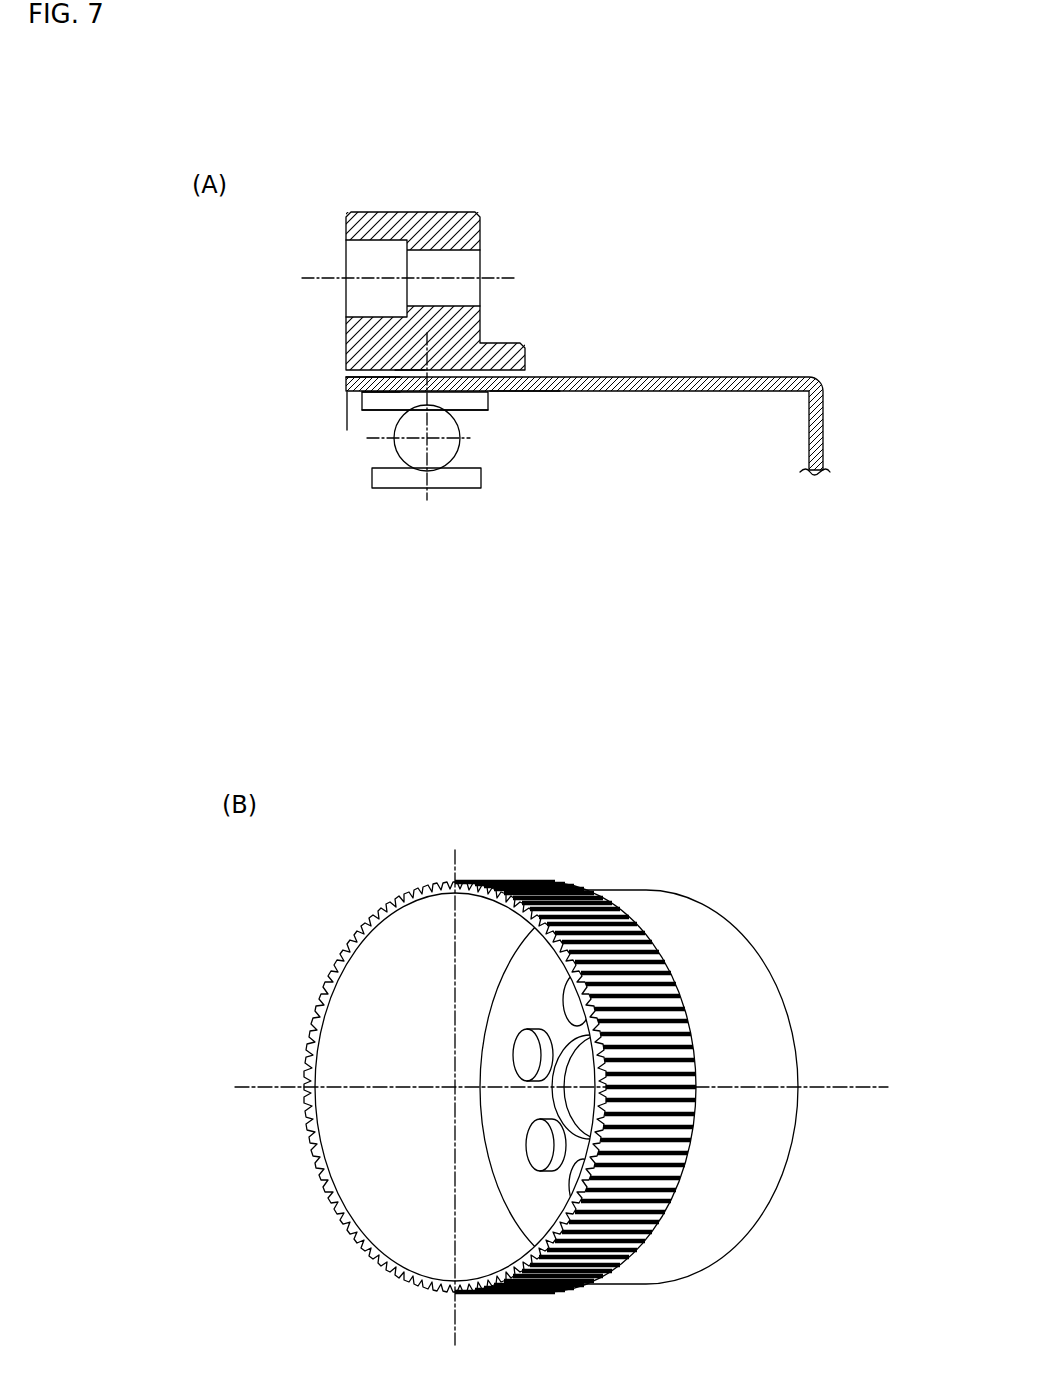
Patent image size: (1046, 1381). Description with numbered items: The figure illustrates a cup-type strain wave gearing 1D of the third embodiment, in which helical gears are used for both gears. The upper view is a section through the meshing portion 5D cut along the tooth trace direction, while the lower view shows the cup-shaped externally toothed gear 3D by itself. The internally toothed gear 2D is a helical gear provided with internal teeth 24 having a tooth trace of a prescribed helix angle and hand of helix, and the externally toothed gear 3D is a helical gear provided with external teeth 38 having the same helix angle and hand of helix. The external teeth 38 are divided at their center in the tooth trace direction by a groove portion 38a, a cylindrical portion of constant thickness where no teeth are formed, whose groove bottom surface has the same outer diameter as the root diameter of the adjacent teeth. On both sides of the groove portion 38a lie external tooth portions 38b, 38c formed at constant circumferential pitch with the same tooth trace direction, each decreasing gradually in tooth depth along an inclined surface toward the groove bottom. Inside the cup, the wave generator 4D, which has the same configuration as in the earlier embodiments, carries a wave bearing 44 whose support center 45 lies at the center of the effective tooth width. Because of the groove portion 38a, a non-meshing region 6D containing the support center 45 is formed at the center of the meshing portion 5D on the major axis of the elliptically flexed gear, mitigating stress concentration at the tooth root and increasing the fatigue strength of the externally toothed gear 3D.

The strain wave gearing 1D is at (578, 312).
The internally toothed gear 2D is at (503, 330).
The externally toothed gear 3D is at (568, 365).
The wave generator 4D is at (503, 470).
The meshing portion 5D is at (326, 381).
The non-meshing region 6D is at (400, 462).
The internal teeth 24 is at (410, 365).
The external teeth 38 is at (583, 808).
The groove portion 38a is at (410, 393).
The external tooth portion 38b is at (365, 401).
The external tooth portion 38c is at (490, 393).
The wave bearing 44 is at (478, 444).
The support center 45 is at (481, 470).